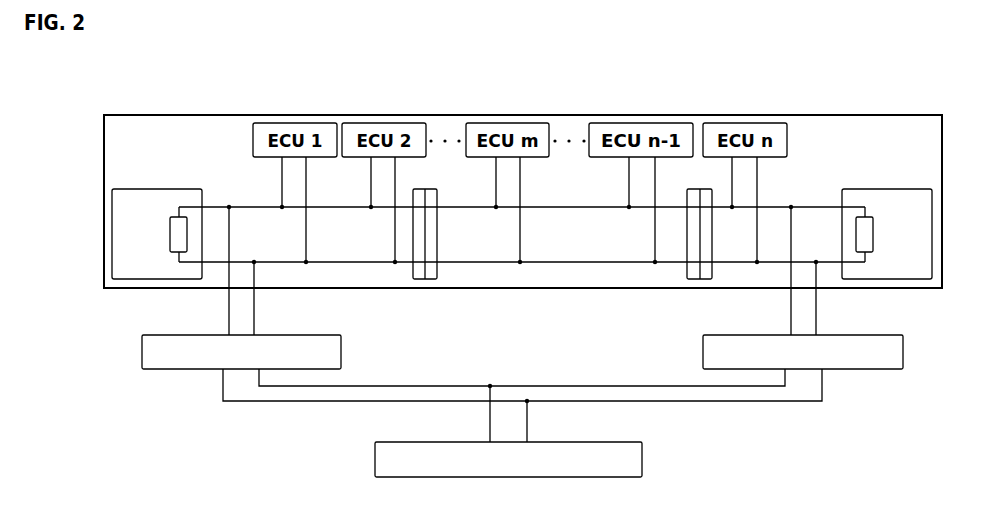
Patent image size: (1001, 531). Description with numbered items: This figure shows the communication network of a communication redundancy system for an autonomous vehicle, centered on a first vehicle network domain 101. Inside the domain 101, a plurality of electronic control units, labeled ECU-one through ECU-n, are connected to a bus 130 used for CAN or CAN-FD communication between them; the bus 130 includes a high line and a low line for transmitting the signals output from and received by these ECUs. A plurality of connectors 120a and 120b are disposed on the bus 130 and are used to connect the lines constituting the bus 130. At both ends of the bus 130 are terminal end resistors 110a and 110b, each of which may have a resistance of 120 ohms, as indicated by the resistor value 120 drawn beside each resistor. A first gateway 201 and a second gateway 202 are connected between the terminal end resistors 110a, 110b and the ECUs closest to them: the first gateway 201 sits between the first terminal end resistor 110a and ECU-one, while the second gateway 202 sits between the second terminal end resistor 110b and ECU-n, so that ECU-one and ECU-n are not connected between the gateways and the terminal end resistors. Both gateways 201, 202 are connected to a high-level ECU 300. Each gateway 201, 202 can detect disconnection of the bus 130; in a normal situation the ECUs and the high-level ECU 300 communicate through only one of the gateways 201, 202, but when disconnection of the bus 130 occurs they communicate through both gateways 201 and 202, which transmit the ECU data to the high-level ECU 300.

The first vehicle network domain 101 is at (807, 115).
The first terminal end resistor 110a is at (157, 205).
The second terminal end resistor 110b is at (880, 189).
The termination resistor (120 ohm) 120 is at (152, 234).
The first connector 120a is at (416, 281).
The second connector 120b is at (690, 281).
The bus 130 is at (566, 207).
The first gateway 201 is at (197, 370).
The second gateway 202 is at (848, 370).
The high-level ECU 300 is at (644, 460).